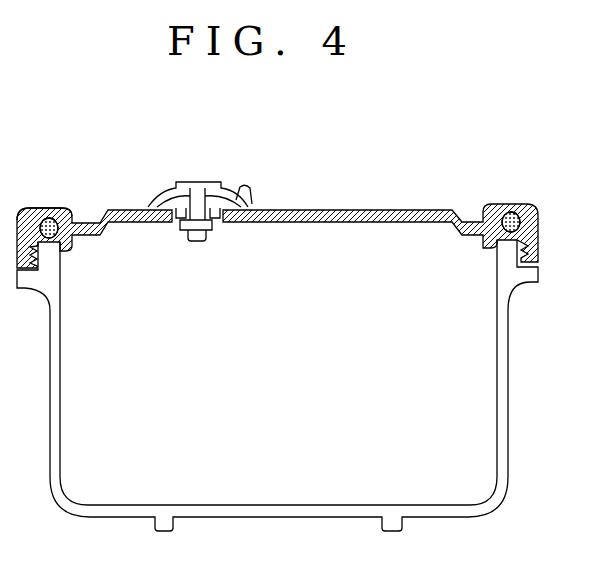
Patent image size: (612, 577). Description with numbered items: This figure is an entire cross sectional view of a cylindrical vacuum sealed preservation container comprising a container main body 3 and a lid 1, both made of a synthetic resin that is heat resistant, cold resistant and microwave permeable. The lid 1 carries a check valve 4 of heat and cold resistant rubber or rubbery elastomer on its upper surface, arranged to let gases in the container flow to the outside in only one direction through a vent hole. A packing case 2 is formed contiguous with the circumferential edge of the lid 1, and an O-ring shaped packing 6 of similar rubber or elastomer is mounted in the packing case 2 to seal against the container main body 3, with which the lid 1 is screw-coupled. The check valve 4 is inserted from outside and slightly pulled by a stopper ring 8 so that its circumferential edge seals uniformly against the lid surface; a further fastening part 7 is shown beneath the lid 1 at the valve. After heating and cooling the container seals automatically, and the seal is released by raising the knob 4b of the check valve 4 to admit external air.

The lid 1 is at (370, 208).
The packing case 2 is at (52, 208).
The container main body 3 is at (62, 394).
The check valve 4 is at (200, 180).
The knob 4b is at (258, 180).
The O-ring shaped packing 6 is at (70, 208).
The valve nut 7 is at (218, 220).
The stopper ring 8 is at (216, 226).